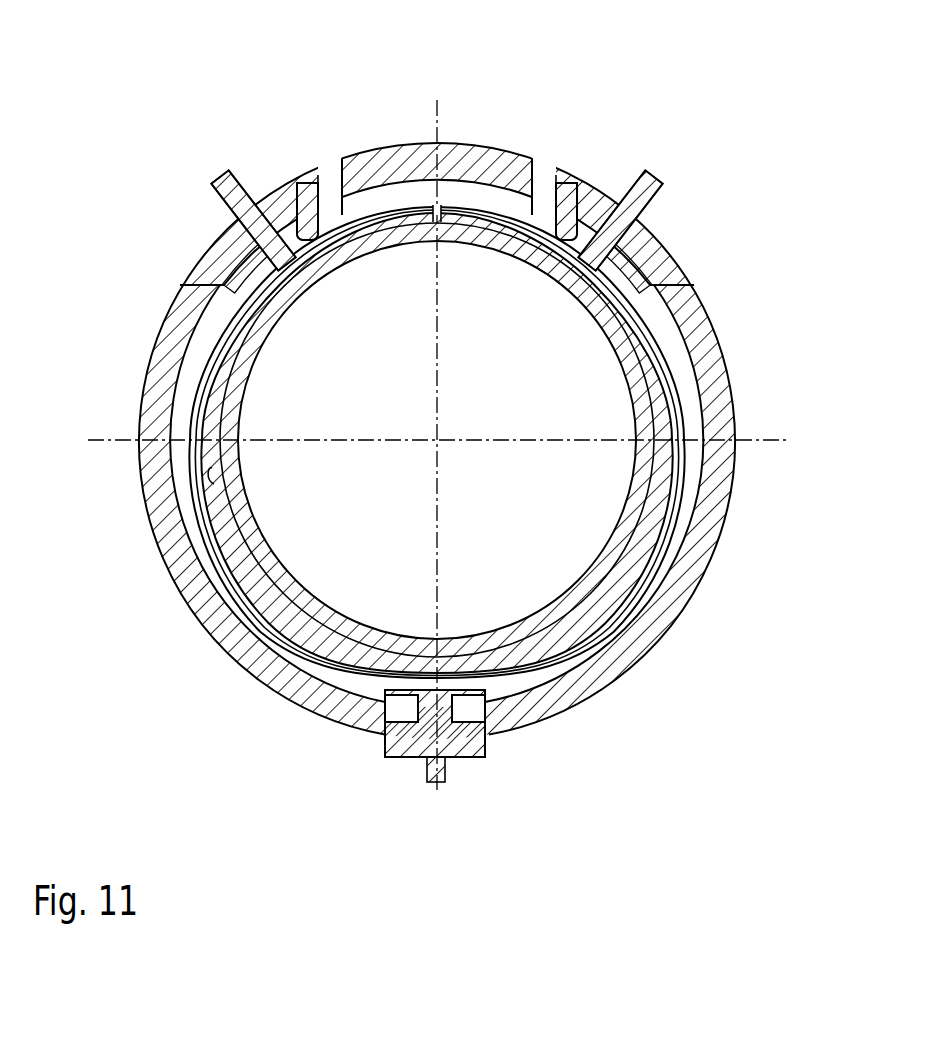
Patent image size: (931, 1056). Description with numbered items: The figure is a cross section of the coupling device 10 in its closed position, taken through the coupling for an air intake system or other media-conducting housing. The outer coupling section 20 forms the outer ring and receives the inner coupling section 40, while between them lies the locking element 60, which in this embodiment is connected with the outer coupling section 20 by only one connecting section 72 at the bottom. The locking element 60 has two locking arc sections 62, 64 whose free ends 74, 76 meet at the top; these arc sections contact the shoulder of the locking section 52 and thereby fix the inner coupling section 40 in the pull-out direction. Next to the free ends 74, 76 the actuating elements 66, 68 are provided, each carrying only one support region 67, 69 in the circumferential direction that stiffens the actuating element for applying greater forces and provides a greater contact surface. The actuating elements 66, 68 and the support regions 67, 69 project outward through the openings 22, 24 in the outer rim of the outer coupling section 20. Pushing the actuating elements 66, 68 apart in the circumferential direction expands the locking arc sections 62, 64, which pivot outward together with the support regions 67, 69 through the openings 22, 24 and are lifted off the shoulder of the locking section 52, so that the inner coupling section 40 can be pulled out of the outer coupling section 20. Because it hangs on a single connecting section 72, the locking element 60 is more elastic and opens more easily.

The coupling device 10 is at (621, 100).
The outer coupling section 20 is at (158, 347).
The opening 22 is at (200, 285).
The opening 24 is at (674, 285).
The inner coupling section 40 is at (268, 352).
The locking section 52 is at (214, 484).
The locking element 60 is at (436, 442).
The locking arc section 62 is at (270, 311).
The locking arc section 64 is at (640, 332).
The actuating element 66 is at (227, 172).
The support region 67 is at (305, 187).
The actuating element 68 is at (653, 178).
The support region 69 is at (562, 188).
The connecting section 72 is at (456, 706).
The free end 74 is at (422, 212).
The free end 76 is at (448, 212).